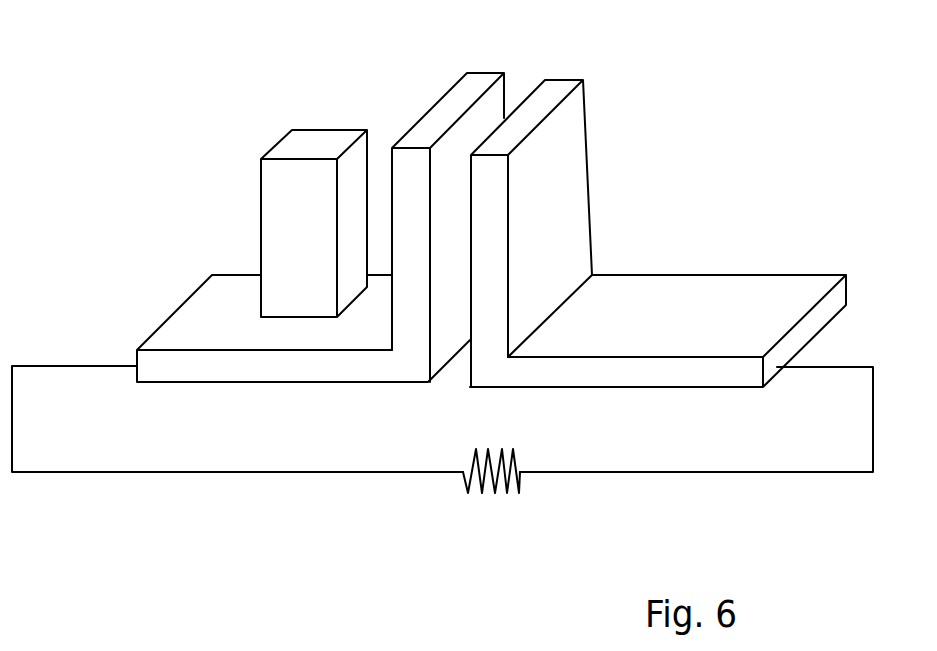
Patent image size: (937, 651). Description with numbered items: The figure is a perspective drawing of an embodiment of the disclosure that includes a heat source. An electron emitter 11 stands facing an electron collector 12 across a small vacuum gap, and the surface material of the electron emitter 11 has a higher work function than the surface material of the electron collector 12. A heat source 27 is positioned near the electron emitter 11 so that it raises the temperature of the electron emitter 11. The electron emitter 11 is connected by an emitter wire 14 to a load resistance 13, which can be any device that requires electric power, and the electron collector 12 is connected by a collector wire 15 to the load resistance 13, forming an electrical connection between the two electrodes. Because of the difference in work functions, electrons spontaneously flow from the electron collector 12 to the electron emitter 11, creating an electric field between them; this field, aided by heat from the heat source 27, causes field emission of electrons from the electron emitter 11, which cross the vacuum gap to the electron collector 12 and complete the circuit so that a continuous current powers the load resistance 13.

The electron emitter 11 is at (427, 110).
The electron collector 12 is at (577, 195).
The load resistance 13 is at (508, 502).
The emitter wire 14 is at (142, 483).
The collector wire 15 is at (833, 483).
The heat source 27 is at (252, 185).